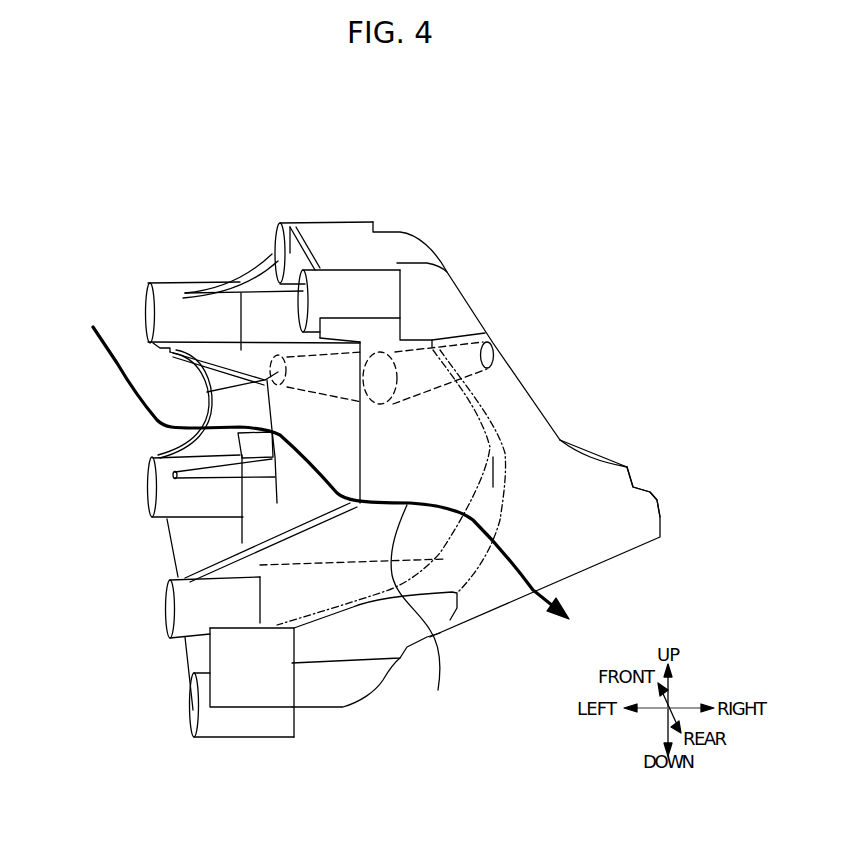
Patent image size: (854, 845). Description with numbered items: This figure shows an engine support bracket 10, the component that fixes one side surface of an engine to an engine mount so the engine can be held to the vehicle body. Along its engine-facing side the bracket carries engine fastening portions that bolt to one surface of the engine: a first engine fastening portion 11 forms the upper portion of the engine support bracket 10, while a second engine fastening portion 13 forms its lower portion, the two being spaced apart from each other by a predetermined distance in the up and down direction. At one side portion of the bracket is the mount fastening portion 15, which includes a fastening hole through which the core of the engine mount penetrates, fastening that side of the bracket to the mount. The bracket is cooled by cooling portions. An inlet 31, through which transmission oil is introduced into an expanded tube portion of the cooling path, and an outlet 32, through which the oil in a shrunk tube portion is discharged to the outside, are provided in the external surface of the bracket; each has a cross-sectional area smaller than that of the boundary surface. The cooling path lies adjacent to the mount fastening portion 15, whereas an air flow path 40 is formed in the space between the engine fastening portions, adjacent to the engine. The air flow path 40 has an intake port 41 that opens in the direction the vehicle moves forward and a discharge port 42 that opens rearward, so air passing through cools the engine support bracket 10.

The engine support bracket 10 is at (82, 185).
The first engine fastening portion 11 is at (192, 315).
The second engine fastening portion 13 is at (173, 498).
The mount fastening portion 15 is at (660, 517).
The inlet 31 is at (205, 396).
The outlet 32 is at (490, 347).
The air flow path 40 is at (438, 690).
The intake port 41 is at (182, 413).
The discharge port 42 is at (460, 485).